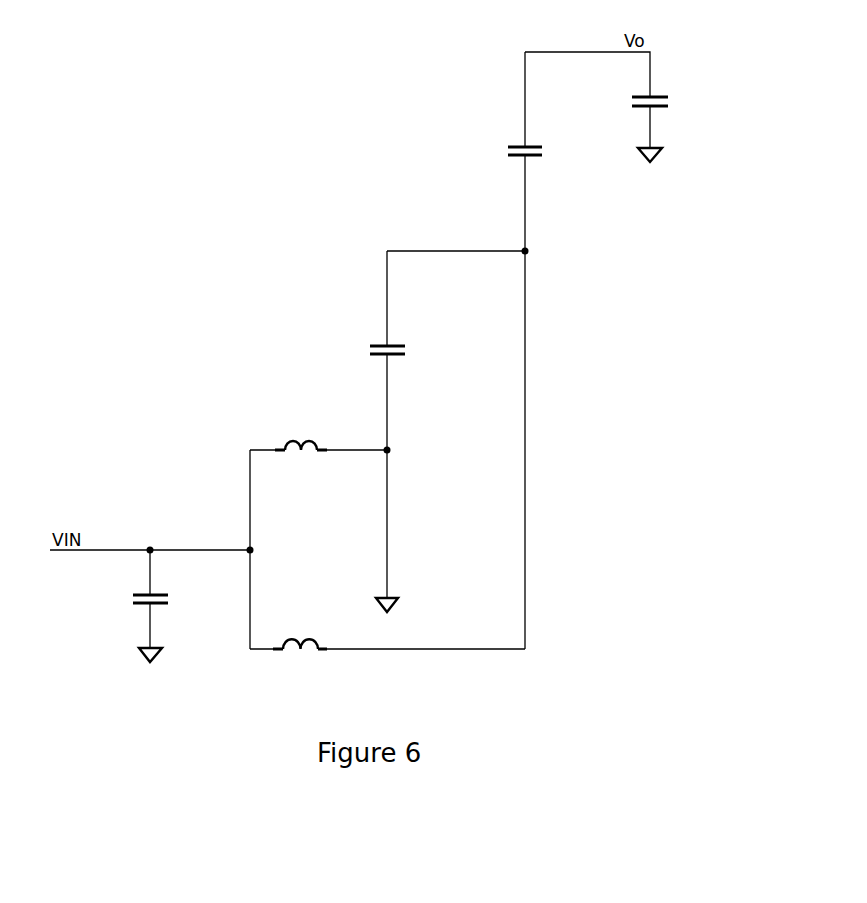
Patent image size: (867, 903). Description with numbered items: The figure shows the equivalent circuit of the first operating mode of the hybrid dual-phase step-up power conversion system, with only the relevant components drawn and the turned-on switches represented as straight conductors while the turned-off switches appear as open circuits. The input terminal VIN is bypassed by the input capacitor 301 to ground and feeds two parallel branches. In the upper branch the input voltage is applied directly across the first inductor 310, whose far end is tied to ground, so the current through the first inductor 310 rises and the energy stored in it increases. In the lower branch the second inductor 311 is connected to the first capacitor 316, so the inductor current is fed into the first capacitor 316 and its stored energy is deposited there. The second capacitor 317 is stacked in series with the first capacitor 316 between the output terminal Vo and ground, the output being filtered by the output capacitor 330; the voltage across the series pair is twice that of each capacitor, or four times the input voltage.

The input capacitor 301 is at (122, 601).
The first inductor 310 is at (283, 439).
The second inductor 311 is at (302, 654).
The first capacitor 316 is at (372, 347).
The second capacitor 317 is at (551, 157).
The output capacitor 330 is at (676, 103).